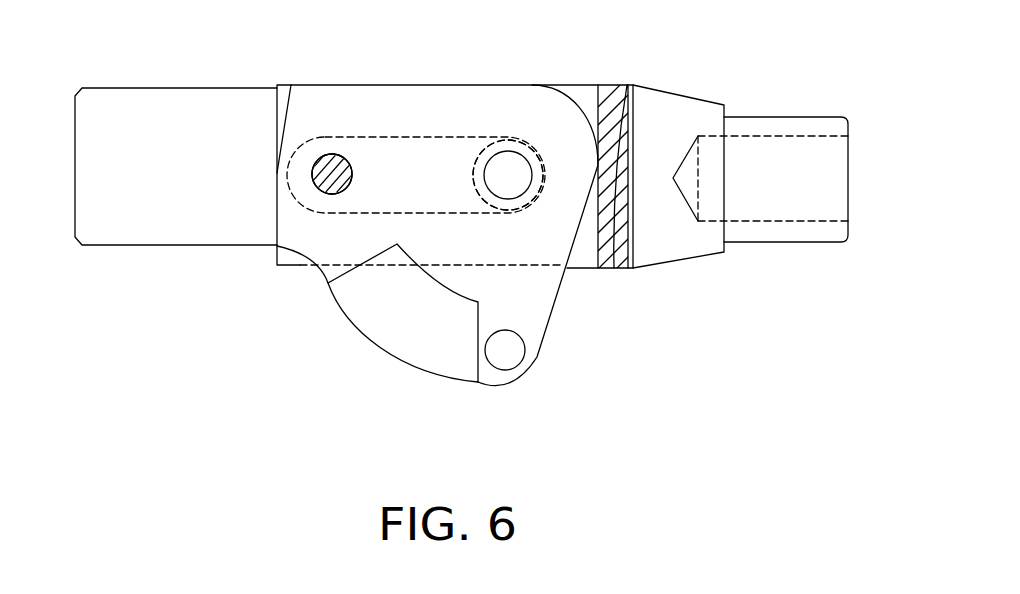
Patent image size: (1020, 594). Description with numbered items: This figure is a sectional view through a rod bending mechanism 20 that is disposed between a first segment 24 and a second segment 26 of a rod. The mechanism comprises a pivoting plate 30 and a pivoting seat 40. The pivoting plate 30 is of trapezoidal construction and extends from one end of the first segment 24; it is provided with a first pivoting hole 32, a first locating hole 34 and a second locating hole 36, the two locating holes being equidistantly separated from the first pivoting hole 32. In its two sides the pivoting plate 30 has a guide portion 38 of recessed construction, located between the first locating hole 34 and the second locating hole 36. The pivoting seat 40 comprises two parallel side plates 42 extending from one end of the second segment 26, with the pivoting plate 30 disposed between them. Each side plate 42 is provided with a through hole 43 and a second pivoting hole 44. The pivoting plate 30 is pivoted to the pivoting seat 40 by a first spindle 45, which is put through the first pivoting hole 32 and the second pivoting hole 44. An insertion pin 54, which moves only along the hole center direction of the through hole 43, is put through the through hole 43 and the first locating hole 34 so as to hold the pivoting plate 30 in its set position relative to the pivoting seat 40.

The rod bending mechanism 20 is at (188, 342).
The first segment 24 is at (168, 103).
The second segment 26 is at (808, 120).
The pivoting plate 30 is at (547, 305).
The first pivoting hole 32 is at (509, 150).
The first locating hole 34 is at (343, 153).
The second locating hole 36 is at (525, 350).
The guide portion 38 is at (392, 320).
The pivoting seat 40 is at (719, 82).
The side plate 42 is at (577, 100).
The through hole 43 is at (332, 174).
The second pivoting hole 44 is at (508, 175).
The first spindle 45 is at (495, 168).
The insertion pin 54 is at (322, 195).